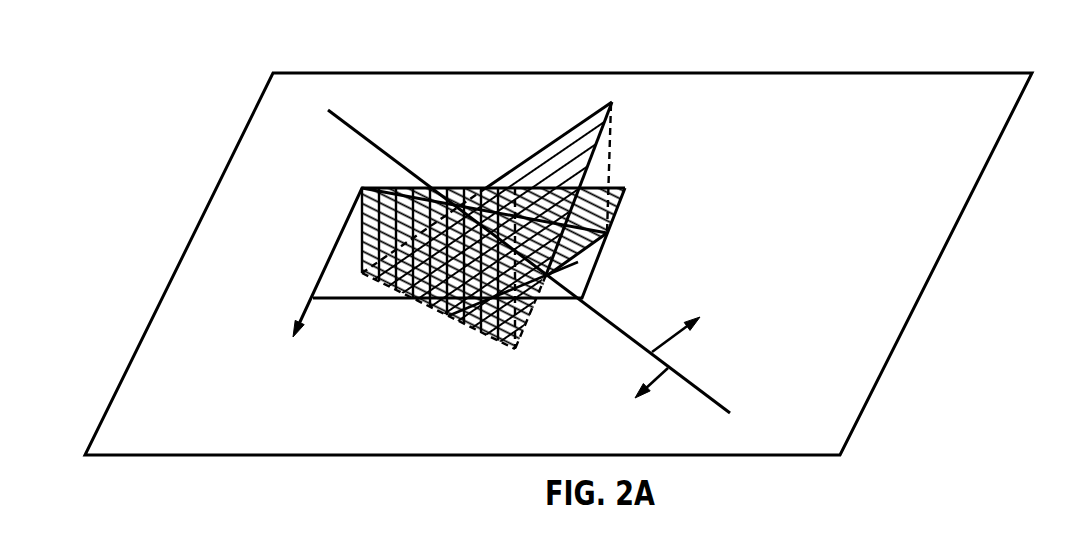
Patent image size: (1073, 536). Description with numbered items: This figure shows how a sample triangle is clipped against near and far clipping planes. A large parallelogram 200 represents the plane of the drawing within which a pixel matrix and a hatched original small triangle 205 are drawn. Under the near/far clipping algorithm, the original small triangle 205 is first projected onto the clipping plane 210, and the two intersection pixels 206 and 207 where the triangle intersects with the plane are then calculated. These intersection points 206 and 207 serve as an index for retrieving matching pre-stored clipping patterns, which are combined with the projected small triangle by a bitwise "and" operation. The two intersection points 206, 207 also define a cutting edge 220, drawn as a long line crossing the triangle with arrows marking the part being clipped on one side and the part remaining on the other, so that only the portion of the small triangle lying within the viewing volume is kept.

The image plane / screen space 200 is at (835, 71).
The original small triangle 205 is at (562, 145).
The intersection pixel 206 is at (460, 205).
The intersection pixel 207 is at (547, 280).
The clipping plane 210 is at (583, 248).
The cutting edge 220 is at (725, 404).